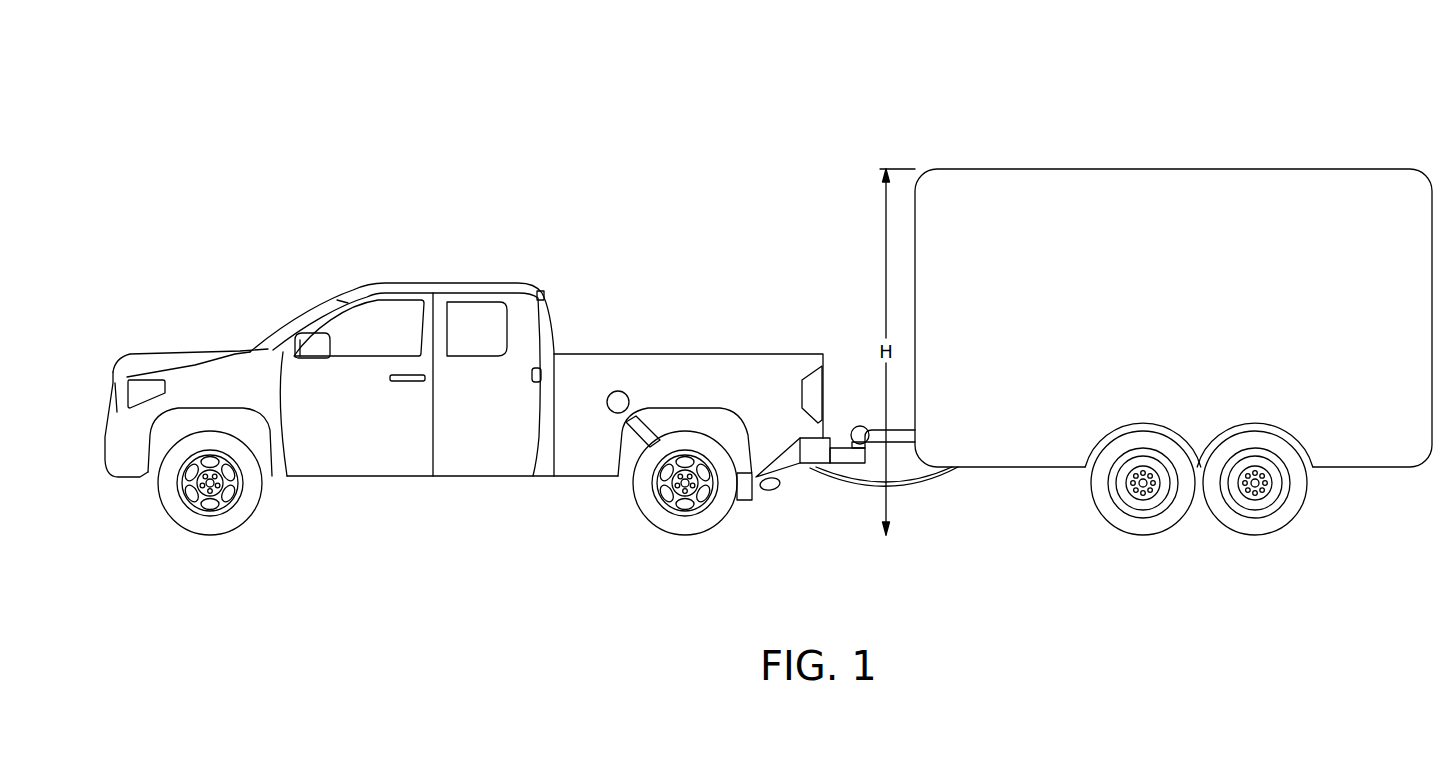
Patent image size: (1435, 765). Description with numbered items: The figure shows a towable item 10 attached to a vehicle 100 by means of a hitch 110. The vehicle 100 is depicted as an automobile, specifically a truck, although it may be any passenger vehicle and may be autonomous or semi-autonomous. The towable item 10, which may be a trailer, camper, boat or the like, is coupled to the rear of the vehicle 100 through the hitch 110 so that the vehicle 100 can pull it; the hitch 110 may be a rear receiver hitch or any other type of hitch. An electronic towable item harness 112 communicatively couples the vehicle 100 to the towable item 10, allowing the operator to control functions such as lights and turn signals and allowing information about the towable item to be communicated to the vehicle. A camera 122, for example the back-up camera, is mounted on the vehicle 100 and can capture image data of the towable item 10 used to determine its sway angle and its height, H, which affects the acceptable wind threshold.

The towable item 10 is at (1375, 140).
The vehicle 100 is at (544, 384).
The hitch 110 is at (858, 475).
The electronic towable item harness 112 is at (908, 492).
The camera 122 is at (545, 298).